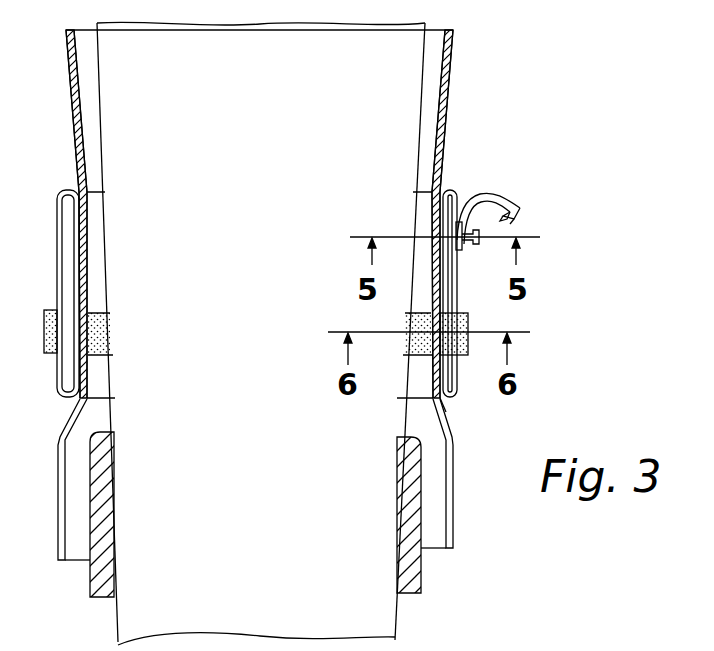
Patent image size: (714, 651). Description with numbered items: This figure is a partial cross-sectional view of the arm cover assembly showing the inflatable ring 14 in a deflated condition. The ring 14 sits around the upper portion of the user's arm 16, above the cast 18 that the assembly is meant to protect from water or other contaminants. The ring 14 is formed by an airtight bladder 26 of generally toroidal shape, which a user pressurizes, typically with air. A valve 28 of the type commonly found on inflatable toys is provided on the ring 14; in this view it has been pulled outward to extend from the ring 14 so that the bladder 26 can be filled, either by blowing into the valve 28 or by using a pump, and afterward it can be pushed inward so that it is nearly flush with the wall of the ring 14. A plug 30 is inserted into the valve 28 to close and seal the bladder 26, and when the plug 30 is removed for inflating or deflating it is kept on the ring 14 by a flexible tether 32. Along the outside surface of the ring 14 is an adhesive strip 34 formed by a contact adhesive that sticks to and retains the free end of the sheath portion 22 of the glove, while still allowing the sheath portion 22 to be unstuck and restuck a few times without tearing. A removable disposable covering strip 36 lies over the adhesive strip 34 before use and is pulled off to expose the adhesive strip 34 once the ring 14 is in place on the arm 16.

The inflatable ring 14 is at (447, 192).
The user's arm 16 is at (380, 621).
The cast 18 is at (422, 575).
The sheath portion 22 is at (453, 521).
The airtight bladder 26 is at (447, 400).
The valve 28 is at (477, 246).
The plug 30 is at (505, 223).
The flexible tether 32 is at (487, 191).
The adhesive strip 34 is at (460, 390).
The covering strip 36 is at (468, 326).